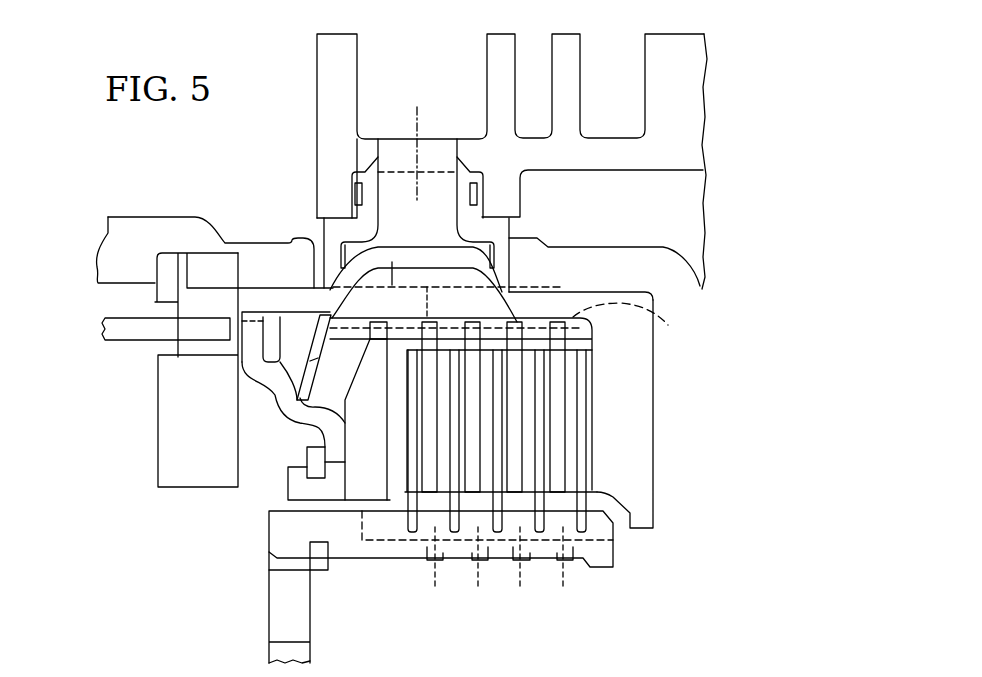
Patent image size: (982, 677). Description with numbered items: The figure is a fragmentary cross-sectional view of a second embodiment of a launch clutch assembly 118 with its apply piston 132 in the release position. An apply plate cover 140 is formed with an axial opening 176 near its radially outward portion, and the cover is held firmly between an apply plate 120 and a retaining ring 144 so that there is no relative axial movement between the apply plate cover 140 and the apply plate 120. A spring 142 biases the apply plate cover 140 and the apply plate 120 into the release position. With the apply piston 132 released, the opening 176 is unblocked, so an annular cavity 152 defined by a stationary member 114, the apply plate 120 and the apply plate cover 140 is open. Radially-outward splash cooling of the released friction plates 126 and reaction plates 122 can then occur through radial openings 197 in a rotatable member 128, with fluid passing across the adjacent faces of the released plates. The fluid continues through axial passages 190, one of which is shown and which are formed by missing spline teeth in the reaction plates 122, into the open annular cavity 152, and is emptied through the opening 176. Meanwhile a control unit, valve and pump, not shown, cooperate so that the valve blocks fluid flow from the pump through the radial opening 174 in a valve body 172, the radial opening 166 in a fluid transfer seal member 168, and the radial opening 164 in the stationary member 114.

The stationary member 114 is at (557, 310).
The clutch assembly 118 is at (702, 524).
The apply plate 120 is at (374, 480).
The reaction plates 122 is at (435, 380).
The friction plates 126 is at (413, 513).
The rotatable member 128 is at (269, 606).
The apply piston 132 is at (128, 342).
The apply plate cover 140 is at (288, 407).
The spring 142 is at (312, 330).
The retaining ring 144 is at (303, 452).
The annular cavity 152 is at (284, 336).
The radial opening 164 is at (423, 300).
The radial opening 166 is at (455, 212).
The fluid transfer seal member 168 is at (498, 231).
The valve body 172 is at (349, 58).
The radial opening 174 is at (380, 157).
The axial opening 176 is at (228, 327).
The axial passages 190 is at (668, 326).
The radial openings 197 is at (545, 603).